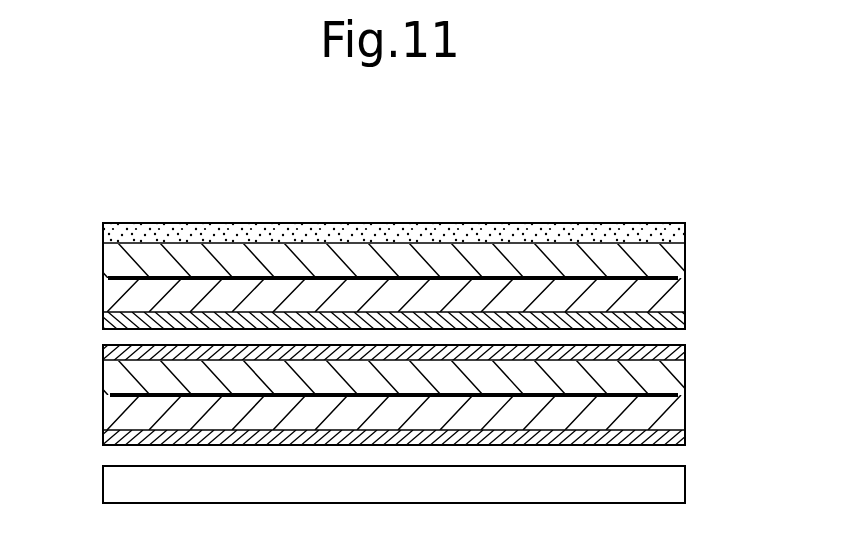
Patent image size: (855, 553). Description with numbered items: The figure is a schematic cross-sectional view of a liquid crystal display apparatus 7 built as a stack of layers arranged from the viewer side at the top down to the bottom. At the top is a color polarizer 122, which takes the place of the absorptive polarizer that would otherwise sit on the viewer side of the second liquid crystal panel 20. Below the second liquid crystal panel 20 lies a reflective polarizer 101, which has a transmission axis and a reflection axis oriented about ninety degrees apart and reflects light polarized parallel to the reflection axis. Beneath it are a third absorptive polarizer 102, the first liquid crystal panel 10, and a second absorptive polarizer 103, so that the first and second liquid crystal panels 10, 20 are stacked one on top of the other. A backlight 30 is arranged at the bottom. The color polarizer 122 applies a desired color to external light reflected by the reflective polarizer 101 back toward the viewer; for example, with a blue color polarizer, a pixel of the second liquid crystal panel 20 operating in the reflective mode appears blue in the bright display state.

The liquid crystal display apparatus 7 is at (528, 188).
The color polarizer 122 is at (687, 232).
The second liquid crystal panel 20 is at (693, 243).
The reflective polarizer 101 is at (103, 320).
The third absorptive polarizer 102 is at (103, 352).
The first liquid crystal panel 10 is at (693, 360).
The second absorptive polarizer 103 is at (103, 440).
The backlight 30 is at (687, 484).